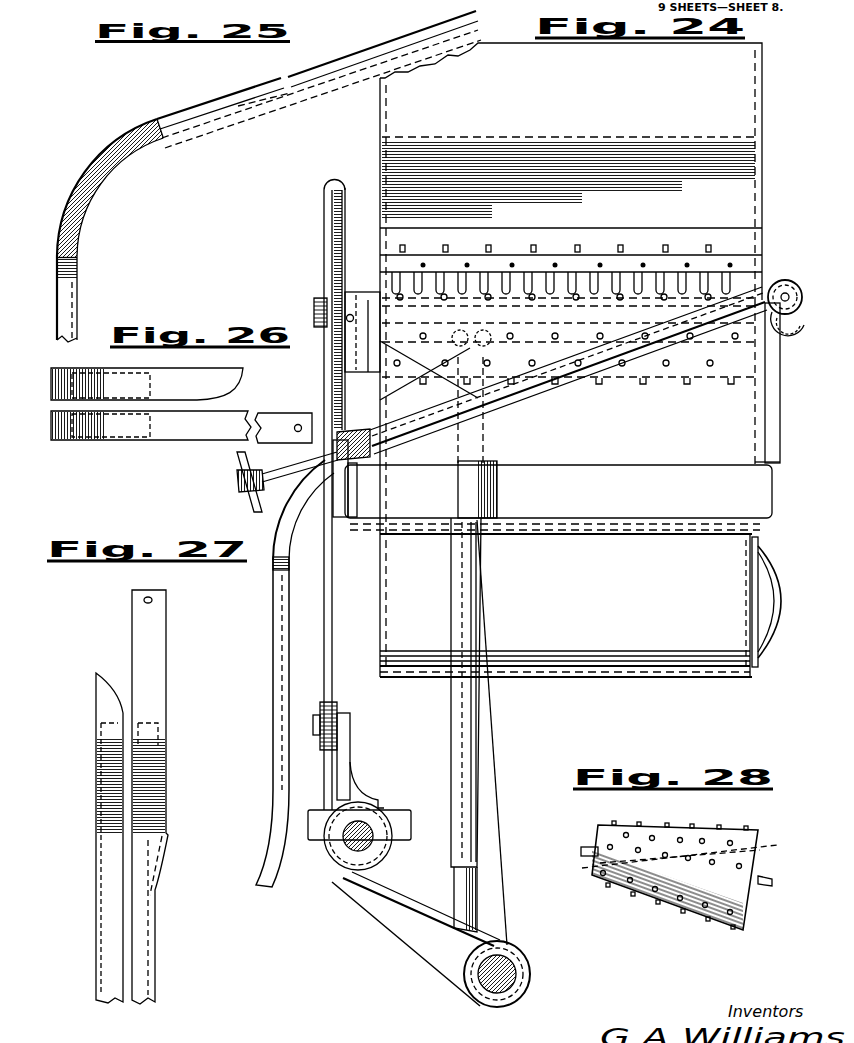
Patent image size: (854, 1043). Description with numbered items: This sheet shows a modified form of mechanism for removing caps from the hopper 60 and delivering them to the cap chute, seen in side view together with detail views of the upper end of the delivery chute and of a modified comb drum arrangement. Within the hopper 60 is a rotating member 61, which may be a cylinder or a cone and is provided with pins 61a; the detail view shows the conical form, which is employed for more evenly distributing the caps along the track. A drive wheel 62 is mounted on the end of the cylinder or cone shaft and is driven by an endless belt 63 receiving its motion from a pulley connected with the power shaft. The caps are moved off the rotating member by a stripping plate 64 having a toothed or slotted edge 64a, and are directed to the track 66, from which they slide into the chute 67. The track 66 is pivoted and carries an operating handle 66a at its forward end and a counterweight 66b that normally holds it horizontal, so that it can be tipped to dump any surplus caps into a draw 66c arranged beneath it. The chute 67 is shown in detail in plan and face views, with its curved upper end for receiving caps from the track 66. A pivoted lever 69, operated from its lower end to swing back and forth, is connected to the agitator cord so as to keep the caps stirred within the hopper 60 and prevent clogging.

In FIG. 24, the hopper 60 is at (571, 360).
In FIG. 28, the rotating member 61 is at (657, 860).
In FIG. 24, the pins 61a is at (622, 250).
In FIG. 24, the drive wheel 62 is at (327, 207).
In FIG. 24, the endless belt 63 is at (333, 253).
In FIG. 24, the stripping plate 64 is at (712, 295).
In FIG. 24, the toothed or slotted edge 64a is at (667, 280).
In FIG. 25, the track 66 is at (269, 175).
In FIG. 24, the track 66 is at (548, 378).
In FIG. 24, the operating handle 66a is at (238, 457).
In FIG. 24, the counterweight 66b is at (788, 340).
In FIG. 24, the draw 66c is at (580, 605).
In FIG. 25, the chute 67 is at (78, 262).
In FIG. 24, the chute 67 is at (283, 533).
In FIG. 26, the chute 67 is at (181, 431).
In FIG. 27, the chute 67 is at (156, 797).
In FIG. 24, the lever 69 is at (484, 742).